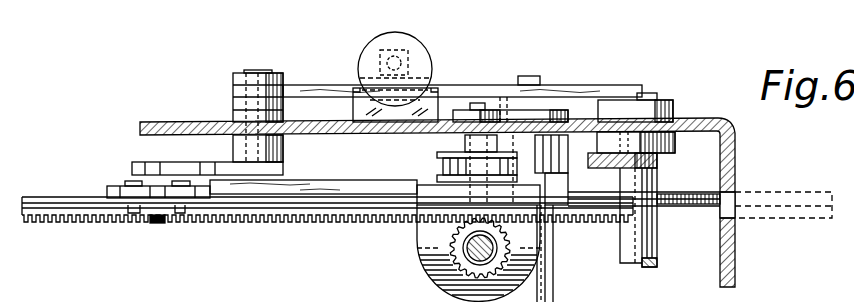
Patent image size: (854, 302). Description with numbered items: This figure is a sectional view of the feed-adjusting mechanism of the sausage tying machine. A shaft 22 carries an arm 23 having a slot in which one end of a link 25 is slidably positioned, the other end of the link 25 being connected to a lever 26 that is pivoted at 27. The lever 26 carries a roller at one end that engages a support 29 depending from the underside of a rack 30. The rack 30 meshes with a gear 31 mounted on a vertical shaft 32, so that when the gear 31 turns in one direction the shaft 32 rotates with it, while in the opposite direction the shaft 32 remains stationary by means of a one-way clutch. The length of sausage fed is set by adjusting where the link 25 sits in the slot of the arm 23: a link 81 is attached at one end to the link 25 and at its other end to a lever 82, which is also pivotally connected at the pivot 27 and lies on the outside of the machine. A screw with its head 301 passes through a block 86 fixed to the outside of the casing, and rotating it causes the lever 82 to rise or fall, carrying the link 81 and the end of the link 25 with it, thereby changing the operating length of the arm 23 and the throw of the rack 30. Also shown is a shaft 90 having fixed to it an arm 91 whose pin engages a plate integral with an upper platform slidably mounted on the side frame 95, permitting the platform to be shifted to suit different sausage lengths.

The shaft 22 is at (553, 284).
The arm 23 is at (560, 178).
The link 25 is at (353, 162).
The lever 26 is at (158, 163).
The pivot 27 is at (255, 72).
The support 29 is at (122, 189).
The rack 30 is at (80, 224).
The gear 31 is at (450, 248).
The vertical shaft 32 is at (470, 264).
The link 81 is at (499, 110).
The lever 82 is at (459, 90).
The block 86 is at (396, 55).
The shaft 90 is at (656, 240).
The arm 91 is at (630, 168).
The side frame 95 is at (695, 118).
The ball 301 is at (385, 45).